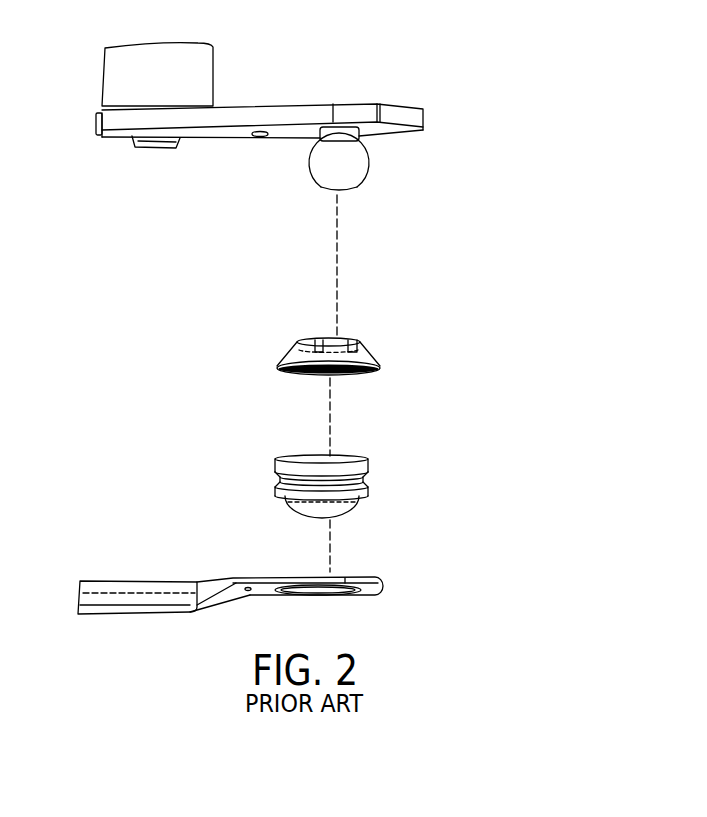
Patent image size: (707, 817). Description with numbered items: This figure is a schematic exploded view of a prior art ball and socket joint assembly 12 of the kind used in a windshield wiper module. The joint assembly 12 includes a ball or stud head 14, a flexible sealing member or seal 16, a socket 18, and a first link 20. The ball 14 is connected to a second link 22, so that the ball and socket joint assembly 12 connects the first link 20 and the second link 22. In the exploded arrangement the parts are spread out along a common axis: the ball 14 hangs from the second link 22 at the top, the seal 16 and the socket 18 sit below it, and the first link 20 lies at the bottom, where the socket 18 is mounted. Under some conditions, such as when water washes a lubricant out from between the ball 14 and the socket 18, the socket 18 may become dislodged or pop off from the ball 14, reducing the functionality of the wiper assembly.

The ball and socket joint assembly 12 is at (515, 175).
The ball or stud head 14 is at (360, 170).
The flexible sealing member or seal 16 is at (360, 344).
The socket 18 is at (366, 463).
The first link 20 is at (383, 588).
The second link 22 is at (412, 115).